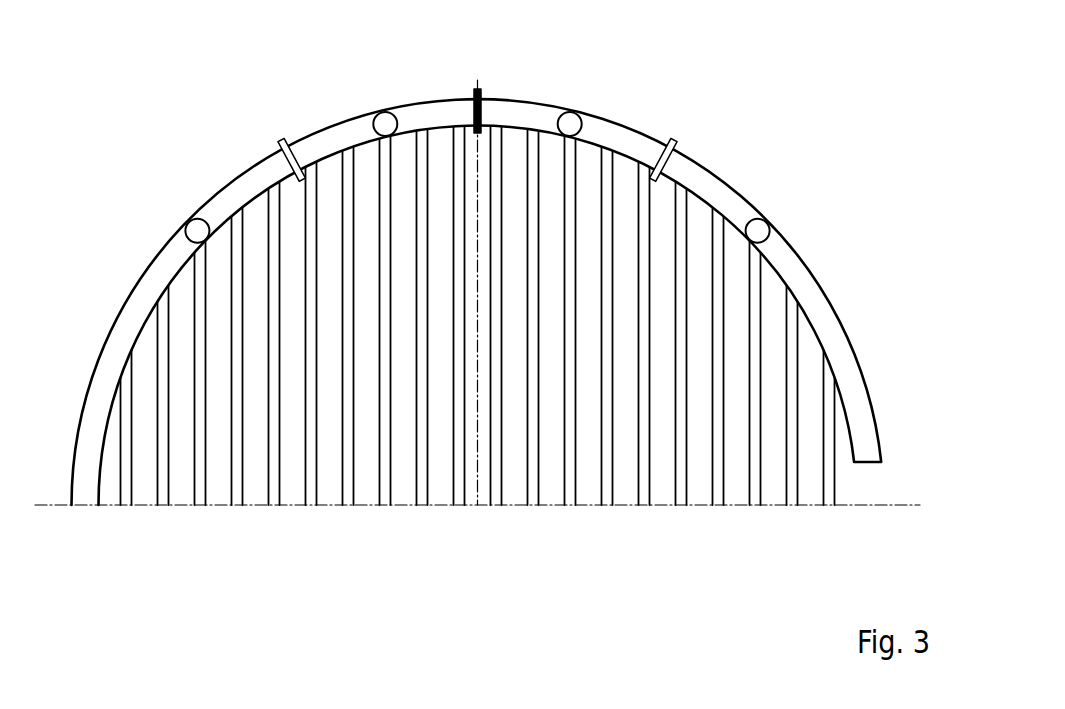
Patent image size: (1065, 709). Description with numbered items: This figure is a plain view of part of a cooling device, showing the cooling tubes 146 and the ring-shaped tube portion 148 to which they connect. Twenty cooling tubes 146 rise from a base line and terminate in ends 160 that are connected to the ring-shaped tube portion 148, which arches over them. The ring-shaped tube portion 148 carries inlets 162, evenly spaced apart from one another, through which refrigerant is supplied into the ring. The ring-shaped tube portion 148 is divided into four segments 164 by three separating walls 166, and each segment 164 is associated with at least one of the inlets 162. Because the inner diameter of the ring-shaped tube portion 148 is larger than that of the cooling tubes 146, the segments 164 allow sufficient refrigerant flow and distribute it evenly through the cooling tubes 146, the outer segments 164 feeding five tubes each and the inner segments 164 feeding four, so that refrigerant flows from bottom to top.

The cooling tubes 146 is at (347, 506).
The ring-shaped tube portion 148 is at (722, 170).
The ends 160 is at (275, 175).
The inlets 162 is at (196, 228).
The segments 164 is at (135, 287).
The separating walls 166 is at (292, 138).